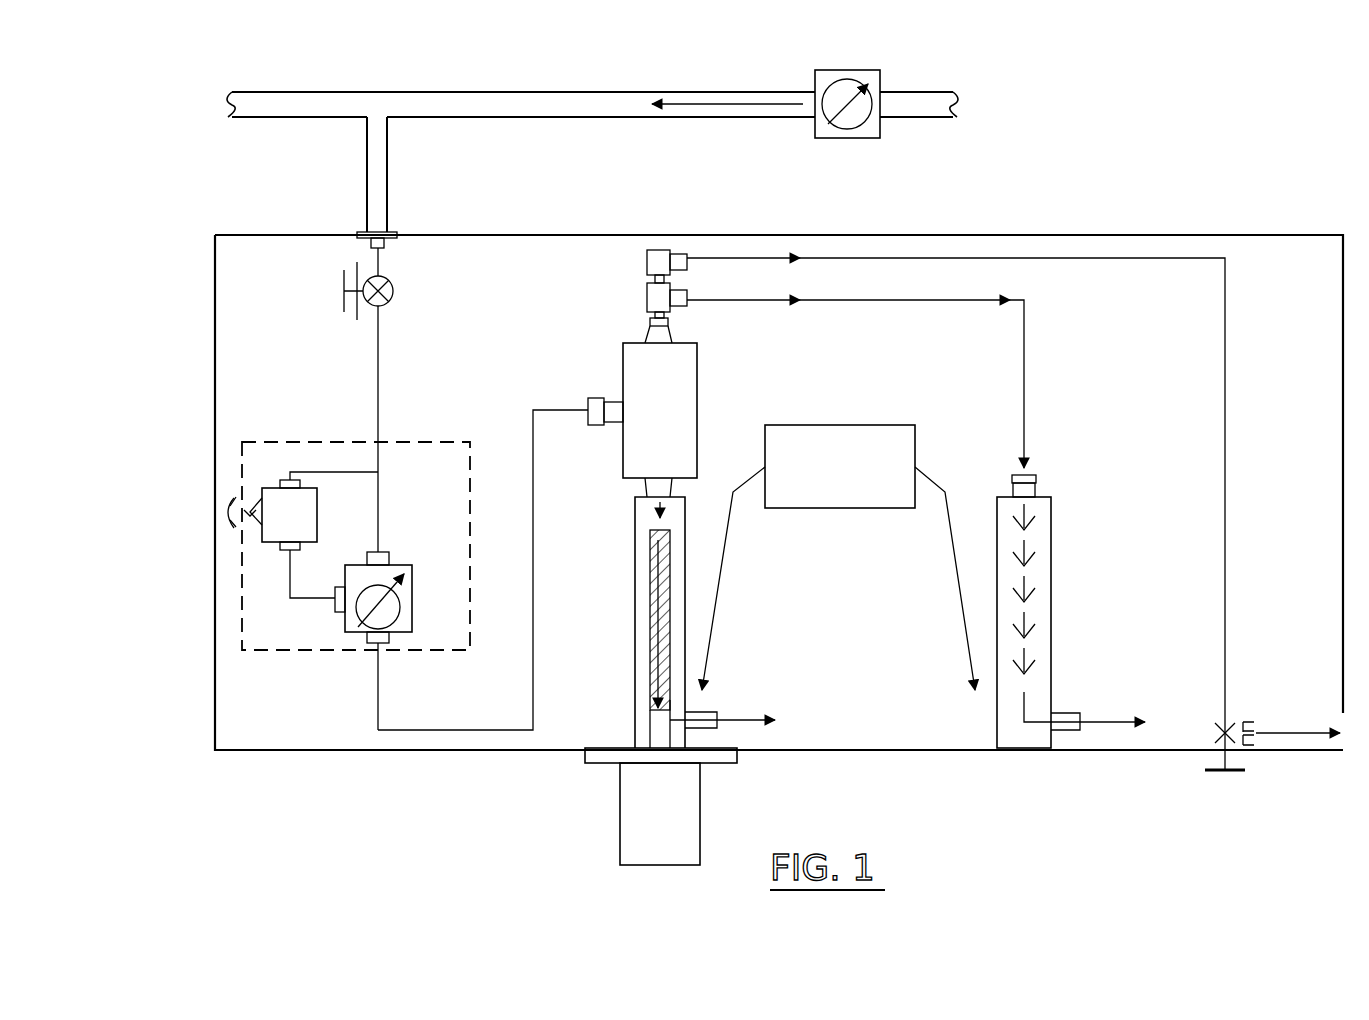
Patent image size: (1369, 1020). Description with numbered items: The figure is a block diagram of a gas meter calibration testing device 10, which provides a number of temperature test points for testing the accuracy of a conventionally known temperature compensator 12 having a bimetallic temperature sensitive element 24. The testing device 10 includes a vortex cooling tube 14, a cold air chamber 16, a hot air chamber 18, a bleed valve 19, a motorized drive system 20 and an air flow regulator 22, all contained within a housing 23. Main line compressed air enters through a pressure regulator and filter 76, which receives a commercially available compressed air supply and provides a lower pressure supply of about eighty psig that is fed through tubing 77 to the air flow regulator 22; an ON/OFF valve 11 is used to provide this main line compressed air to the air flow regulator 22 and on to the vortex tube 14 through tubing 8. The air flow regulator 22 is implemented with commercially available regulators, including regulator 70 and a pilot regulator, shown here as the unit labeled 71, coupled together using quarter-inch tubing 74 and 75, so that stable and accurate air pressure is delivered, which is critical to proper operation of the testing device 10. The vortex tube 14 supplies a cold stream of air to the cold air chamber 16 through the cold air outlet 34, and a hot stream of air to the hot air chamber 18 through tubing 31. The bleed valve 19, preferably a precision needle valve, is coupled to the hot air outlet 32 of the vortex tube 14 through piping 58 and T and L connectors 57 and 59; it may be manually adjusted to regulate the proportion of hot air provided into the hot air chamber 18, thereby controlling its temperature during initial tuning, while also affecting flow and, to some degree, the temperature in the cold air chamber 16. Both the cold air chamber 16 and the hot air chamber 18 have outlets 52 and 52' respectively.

The testing device 10 is at (1147, 134).
The ON/OFF valve 11 is at (392, 284).
The tubing 8 is at (533, 484).
The temperature compensator 12 is at (678, 825).
The vortex cooling tube 14 is at (700, 376).
The cold air chamber 16 is at (635, 615).
The hot air chamber 18 is at (1051, 616).
The bleed valve 19 is at (1245, 700).
The motorized drive system 20 is at (838, 425).
The air flow regulator 22 is at (258, 442).
The housing 23 is at (1278, 233).
The bimetallic temperature sensitive element 24 is at (652, 578).
The tubing 31 is at (915, 300).
The hot air outlet 32 is at (676, 334).
The cold air outlet 34 is at (680, 492).
The outlet 52 is at (732, 689).
The outlet 52' is at (1087, 690).
The T connector 57 is at (652, 296).
The piping 58 is at (1070, 258).
The L connector 59 is at (652, 252).
The regulator 70 is at (275, 496).
The regulator 11R 71 is at (355, 633).
The tubing 74 is at (290, 596).
The tubing 75 is at (307, 472).
The pressure regulator and filter 76 is at (815, 125).
The tubing 77 is at (380, 365).